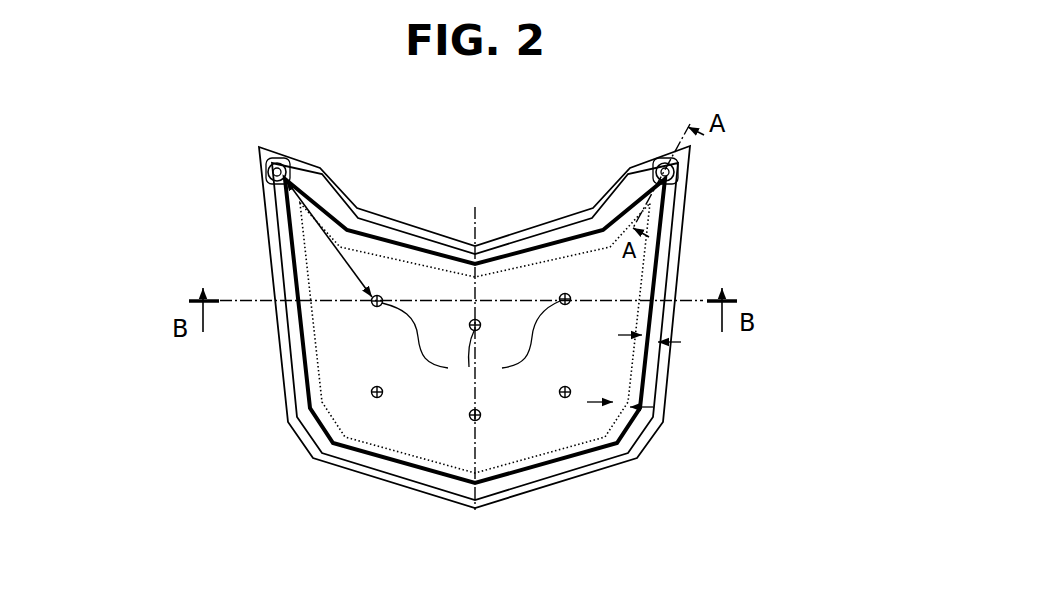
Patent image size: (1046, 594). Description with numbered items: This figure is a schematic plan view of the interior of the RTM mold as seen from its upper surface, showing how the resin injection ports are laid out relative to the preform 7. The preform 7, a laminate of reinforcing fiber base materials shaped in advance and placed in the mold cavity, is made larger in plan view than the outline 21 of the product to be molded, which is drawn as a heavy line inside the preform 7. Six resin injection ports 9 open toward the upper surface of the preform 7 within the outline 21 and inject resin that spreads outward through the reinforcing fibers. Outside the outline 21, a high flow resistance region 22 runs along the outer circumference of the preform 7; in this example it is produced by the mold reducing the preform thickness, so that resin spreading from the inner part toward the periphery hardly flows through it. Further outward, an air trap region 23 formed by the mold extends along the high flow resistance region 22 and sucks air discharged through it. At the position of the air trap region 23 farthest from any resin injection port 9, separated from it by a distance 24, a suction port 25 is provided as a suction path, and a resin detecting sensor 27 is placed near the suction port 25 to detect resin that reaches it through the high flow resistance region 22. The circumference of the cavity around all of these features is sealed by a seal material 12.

The preform 7 is at (340, 363).
The resin injection port 9 is at (383, 390).
The seal material 12 is at (660, 154).
The outline of product 21 is at (380, 448).
The high flow resistance region 22 is at (617, 412).
The air trap region 23 is at (657, 338).
The distance 24 is at (312, 258).
The suction port 25 is at (657, 172).
The resin detecting sensor 27 is at (282, 162).